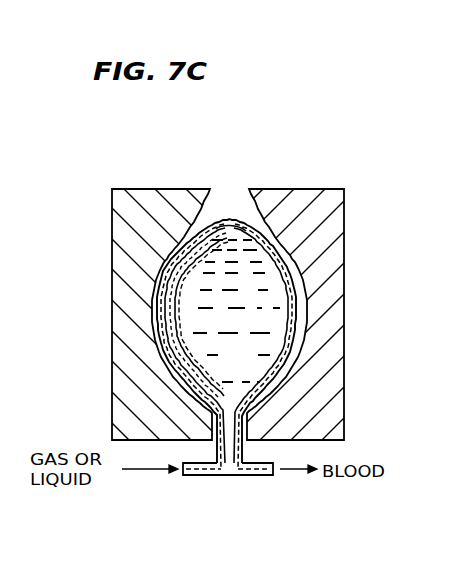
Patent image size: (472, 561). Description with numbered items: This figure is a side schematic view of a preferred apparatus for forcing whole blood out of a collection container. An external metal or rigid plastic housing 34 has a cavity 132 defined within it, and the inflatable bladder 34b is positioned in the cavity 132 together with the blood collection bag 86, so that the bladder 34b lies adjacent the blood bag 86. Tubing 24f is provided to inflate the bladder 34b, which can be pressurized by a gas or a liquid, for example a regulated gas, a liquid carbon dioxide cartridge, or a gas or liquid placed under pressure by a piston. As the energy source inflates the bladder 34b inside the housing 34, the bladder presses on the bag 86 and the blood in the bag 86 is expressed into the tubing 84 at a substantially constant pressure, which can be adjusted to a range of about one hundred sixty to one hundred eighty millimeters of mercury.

The housing 34 is at (122, 188).
The inflatable bladder 34b is at (170, 313).
The cavity 132 is at (238, 218).
The blood collection bag 86 is at (236, 311).
The tubing 24f is at (193, 480).
The tubing 84 is at (261, 480).